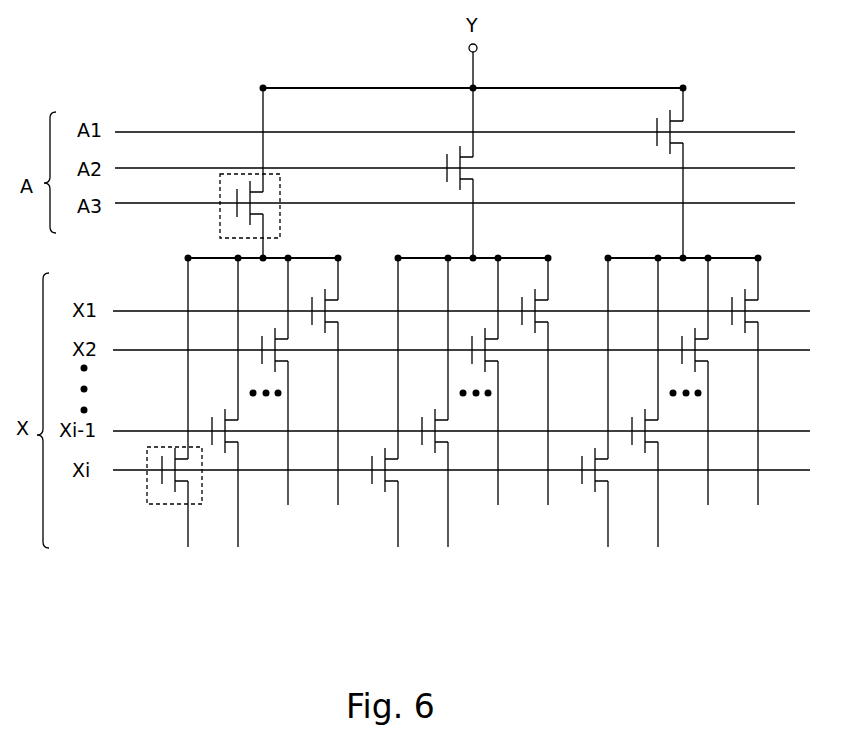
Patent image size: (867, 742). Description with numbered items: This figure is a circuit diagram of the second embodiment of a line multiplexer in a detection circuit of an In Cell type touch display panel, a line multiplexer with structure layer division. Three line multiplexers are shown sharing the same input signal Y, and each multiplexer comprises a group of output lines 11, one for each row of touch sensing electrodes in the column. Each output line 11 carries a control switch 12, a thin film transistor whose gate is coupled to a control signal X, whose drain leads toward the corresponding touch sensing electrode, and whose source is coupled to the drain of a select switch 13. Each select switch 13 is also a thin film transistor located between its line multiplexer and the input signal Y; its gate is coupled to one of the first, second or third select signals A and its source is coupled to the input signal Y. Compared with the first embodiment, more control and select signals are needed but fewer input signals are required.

The output line 11 is at (224, 412).
The control switch 12 is at (163, 507).
The select switch 13 is at (220, 192).